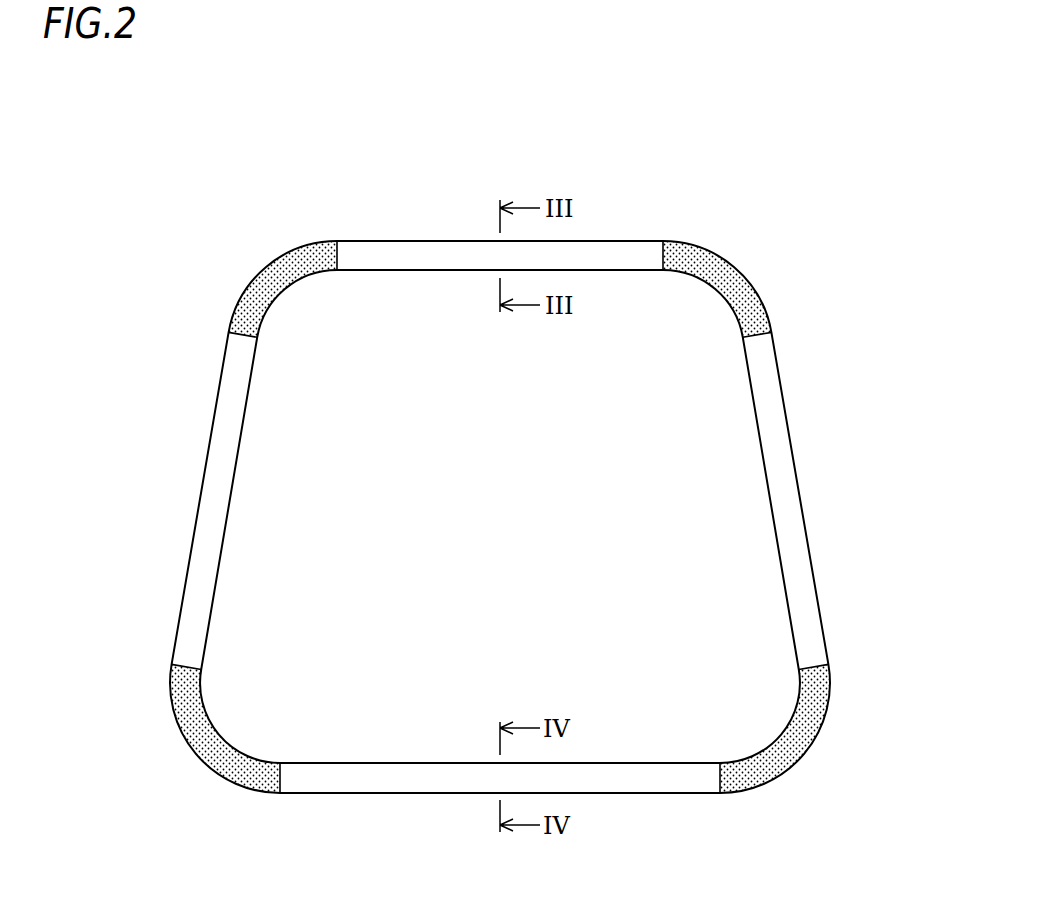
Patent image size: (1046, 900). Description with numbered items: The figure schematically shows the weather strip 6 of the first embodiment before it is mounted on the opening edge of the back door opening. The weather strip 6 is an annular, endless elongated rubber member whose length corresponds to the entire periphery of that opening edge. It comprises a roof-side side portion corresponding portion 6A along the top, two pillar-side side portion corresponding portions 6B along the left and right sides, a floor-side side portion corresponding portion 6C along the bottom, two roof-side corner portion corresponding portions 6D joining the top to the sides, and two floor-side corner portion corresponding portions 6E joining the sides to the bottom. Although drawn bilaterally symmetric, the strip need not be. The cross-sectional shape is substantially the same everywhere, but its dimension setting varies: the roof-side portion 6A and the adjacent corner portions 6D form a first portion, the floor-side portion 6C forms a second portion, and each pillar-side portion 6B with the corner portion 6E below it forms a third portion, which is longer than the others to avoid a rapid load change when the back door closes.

The weather strip 6 is at (645, 162).
The roof-side side portion corresponding portion 6A is at (400, 258).
The pillar-side side portion corresponding portion 6B is at (212, 522).
The floor-side side portion corresponding portion 6C is at (388, 777).
The roof-side corner portion corresponding portion 6D is at (282, 275).
The floor-side corner portion corresponding portion 6E is at (213, 750).